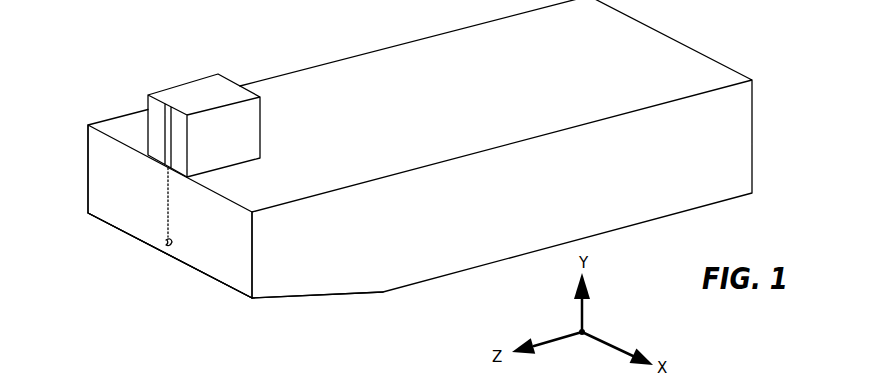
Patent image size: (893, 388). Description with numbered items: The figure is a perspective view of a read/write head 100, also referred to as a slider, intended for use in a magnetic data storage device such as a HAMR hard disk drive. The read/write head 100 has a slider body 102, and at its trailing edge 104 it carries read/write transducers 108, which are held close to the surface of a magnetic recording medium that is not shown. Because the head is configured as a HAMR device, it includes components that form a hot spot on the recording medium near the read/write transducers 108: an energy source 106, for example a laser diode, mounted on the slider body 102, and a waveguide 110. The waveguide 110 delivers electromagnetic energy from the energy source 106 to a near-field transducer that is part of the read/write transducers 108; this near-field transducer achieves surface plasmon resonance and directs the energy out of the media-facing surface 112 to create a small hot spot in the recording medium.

The read/write head 100 is at (721, 31).
The slider body 102 is at (367, 55).
The trailing edge 104 is at (93, 192).
The energy source 106 is at (170, 88).
The read/write transducers 108 is at (165, 282).
The waveguide 110 is at (166, 203).
The media-facing surface 112 is at (243, 299).